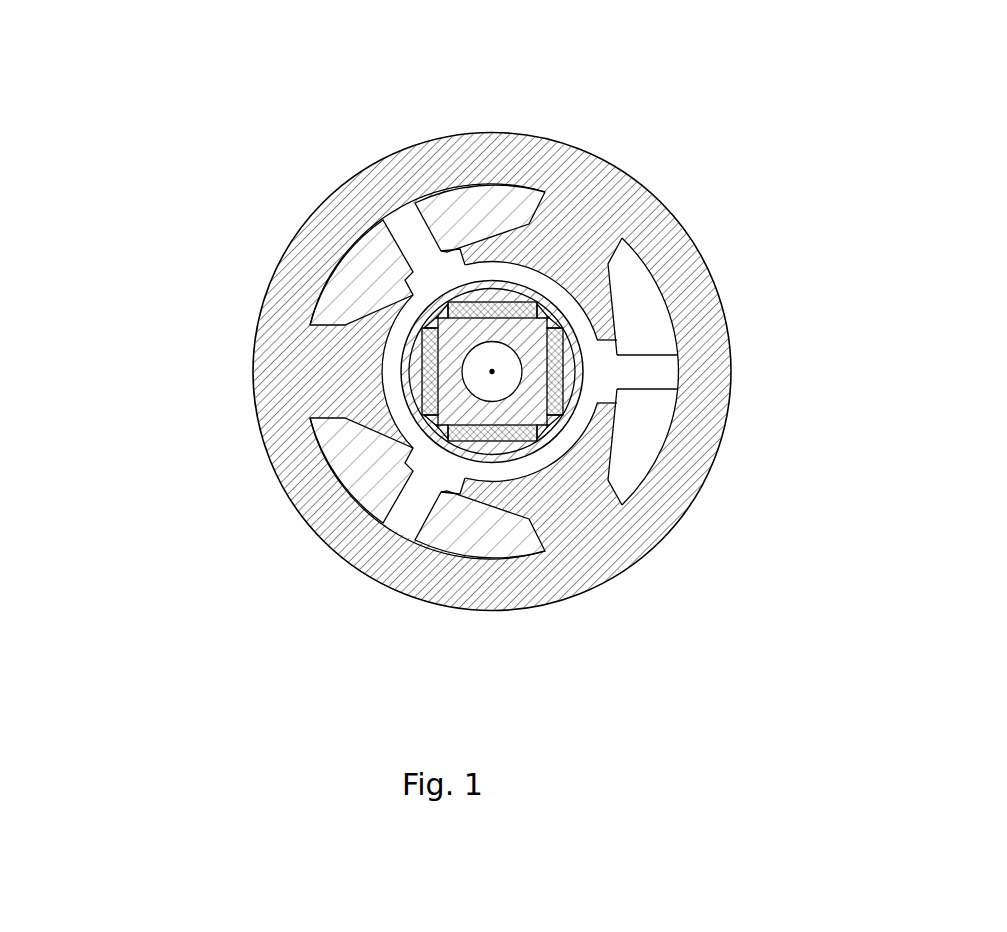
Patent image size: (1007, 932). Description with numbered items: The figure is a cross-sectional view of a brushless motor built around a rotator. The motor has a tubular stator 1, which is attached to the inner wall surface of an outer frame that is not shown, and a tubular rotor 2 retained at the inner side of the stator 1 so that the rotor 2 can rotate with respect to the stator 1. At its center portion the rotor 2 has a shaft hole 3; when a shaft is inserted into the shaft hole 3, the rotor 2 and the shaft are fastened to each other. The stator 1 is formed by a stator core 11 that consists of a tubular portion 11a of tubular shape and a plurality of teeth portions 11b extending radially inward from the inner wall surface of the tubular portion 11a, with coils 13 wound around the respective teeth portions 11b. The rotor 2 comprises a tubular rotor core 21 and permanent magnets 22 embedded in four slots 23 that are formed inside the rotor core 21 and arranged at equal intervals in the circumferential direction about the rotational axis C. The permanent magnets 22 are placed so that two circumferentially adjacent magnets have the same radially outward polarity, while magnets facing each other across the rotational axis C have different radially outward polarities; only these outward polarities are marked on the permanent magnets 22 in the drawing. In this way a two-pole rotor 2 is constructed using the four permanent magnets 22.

The stator 1 is at (600, 153).
The rotor 2 is at (531, 432).
The shaft hole 3 is at (478, 383).
The stator core 11 is at (391, 375).
The tubular portion 11a is at (294, 453).
The teeth portions 11b is at (343, 368).
The coil 13 is at (481, 212).
The rotor core 21 is at (513, 408).
The permanent magnets 22 is at (566, 353).
The slots 23 is at (548, 438).
The rotational axis C is at (494, 373).